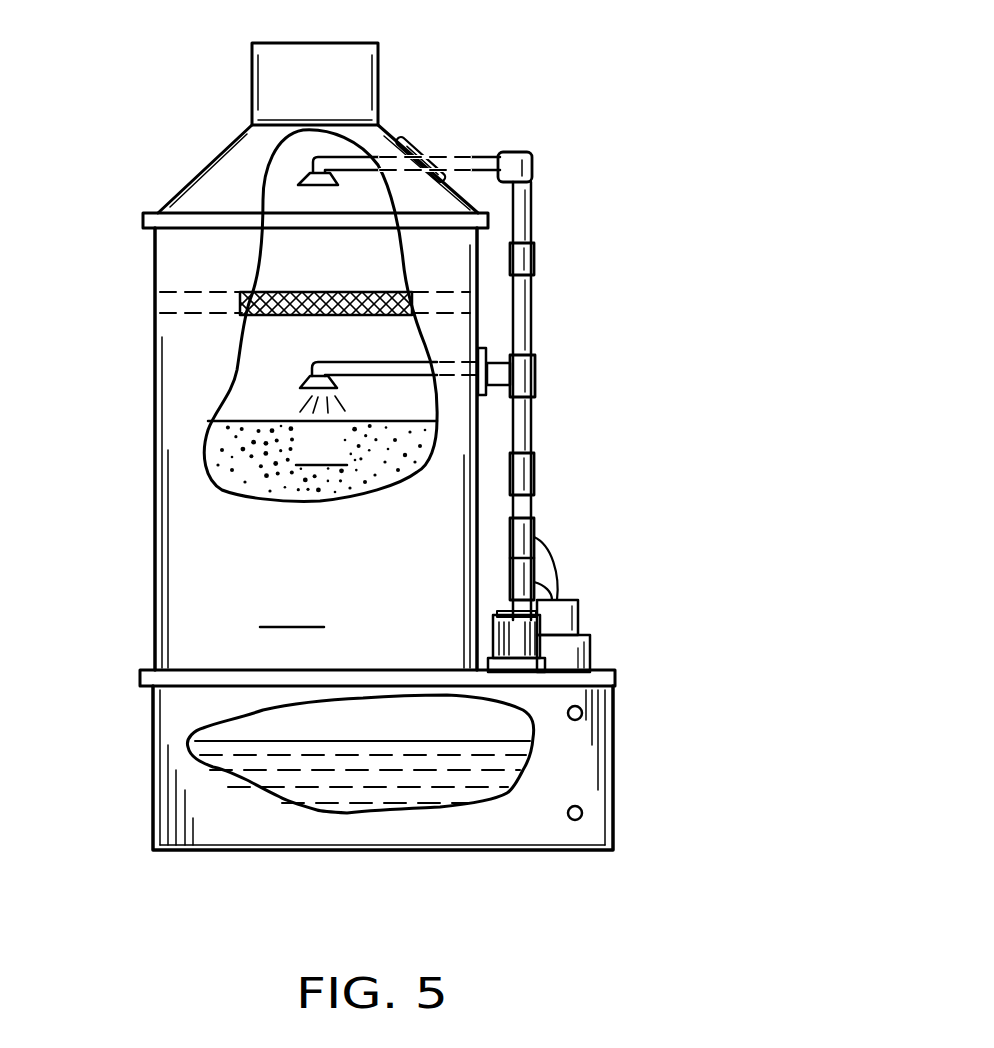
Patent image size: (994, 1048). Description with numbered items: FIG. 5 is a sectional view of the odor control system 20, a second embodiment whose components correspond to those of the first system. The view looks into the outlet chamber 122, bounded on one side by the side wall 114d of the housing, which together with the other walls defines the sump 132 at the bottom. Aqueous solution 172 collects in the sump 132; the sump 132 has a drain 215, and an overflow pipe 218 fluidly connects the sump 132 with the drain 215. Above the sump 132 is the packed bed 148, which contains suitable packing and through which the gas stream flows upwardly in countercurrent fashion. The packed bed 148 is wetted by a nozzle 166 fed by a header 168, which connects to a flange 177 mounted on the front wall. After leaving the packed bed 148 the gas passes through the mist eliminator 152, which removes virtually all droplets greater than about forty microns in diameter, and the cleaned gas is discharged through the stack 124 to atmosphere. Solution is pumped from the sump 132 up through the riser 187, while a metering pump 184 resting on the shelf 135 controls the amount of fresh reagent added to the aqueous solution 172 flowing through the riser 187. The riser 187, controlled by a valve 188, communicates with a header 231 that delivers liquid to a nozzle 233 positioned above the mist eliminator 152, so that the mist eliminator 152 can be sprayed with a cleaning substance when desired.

The odor control system 20 is at (708, 374).
The stack 124 is at (379, 70).
The nozzle 233 is at (302, 180).
The header 231 is at (463, 153).
The valve 188 is at (538, 250).
The mist eliminator 152 is at (262, 292).
The flange 177 is at (485, 355).
The nozzle 166 is at (300, 382).
The header 168 is at (405, 376).
The packed bed 148 is at (322, 457).
The outlet chamber 122 is at (170, 492).
The riser 187 is at (532, 508).
The metering pump 184 is at (580, 612).
The side wall 114d is at (292, 607).
The shelf 135 is at (616, 680).
The sump 132 is at (202, 712).
The overflow pipe 218 is at (582, 714).
The drain 215 is at (582, 813).
The aqueous solution 172 is at (300, 778).